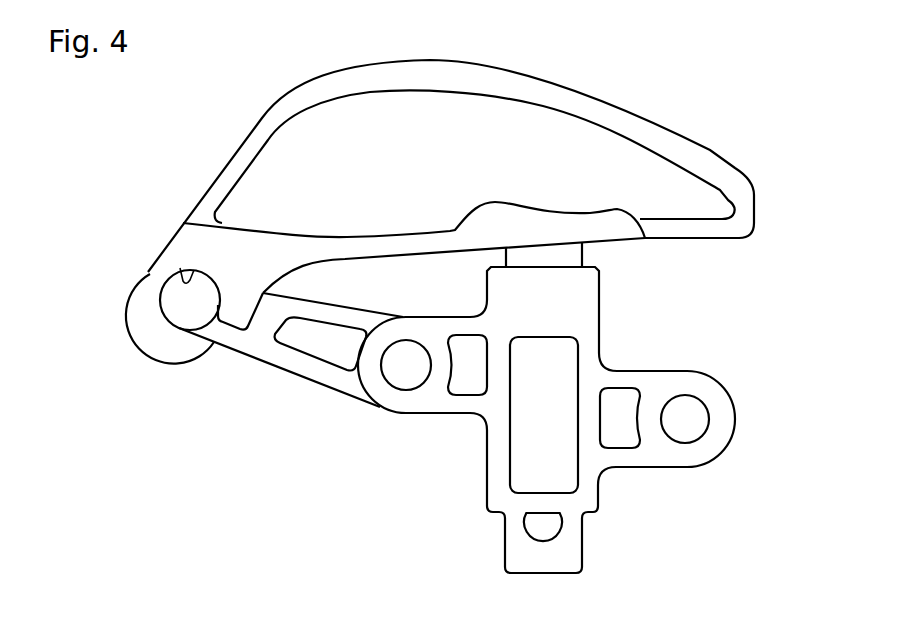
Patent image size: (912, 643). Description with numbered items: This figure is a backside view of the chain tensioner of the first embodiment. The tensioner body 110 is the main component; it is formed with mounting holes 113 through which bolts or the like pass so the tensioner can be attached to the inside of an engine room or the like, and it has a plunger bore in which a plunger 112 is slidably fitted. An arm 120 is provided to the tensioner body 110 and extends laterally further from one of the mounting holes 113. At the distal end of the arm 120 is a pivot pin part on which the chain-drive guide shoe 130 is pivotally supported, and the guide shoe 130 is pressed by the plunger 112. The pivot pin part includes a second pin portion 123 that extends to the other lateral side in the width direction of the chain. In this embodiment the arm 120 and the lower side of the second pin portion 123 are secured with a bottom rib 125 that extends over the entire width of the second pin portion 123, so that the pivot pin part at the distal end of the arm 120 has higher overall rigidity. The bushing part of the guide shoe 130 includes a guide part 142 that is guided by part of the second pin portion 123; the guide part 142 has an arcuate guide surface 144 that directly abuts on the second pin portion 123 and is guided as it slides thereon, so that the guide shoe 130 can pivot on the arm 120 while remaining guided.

The tensioner body 110 is at (487, 463).
The plunger 112 is at (585, 252).
The mounting holes 113 is at (406, 367).
The arm 120 is at (302, 377).
The second pin portion 123 is at (187, 295).
The bottom rib 125 is at (227, 333).
The chain-drive guide shoe 130 is at (638, 107).
The guide part 142 is at (160, 272).
The arcuate guide surface 144 is at (183, 282).